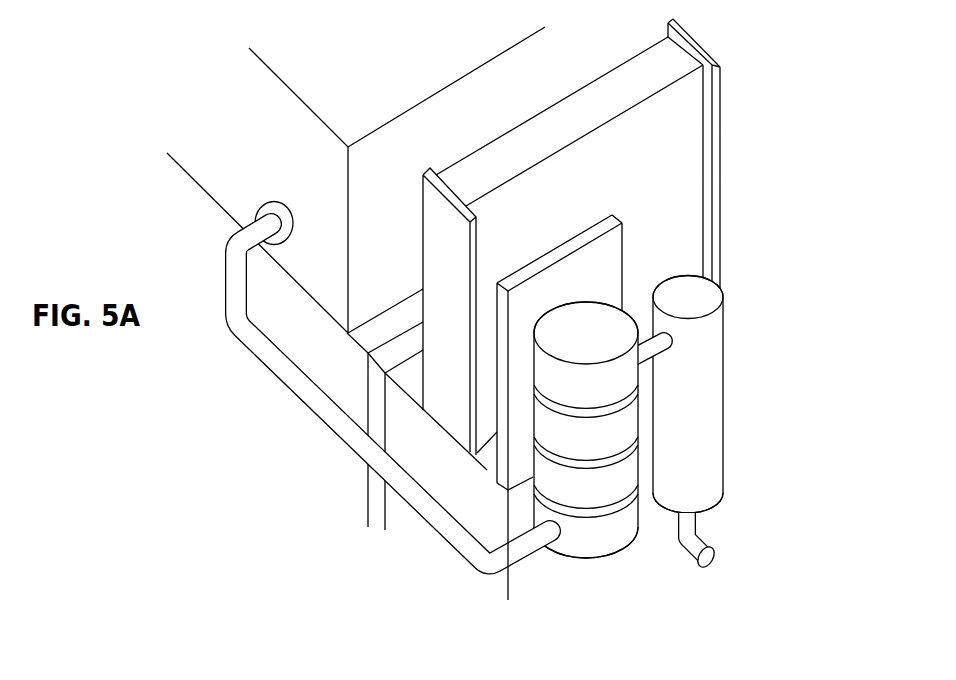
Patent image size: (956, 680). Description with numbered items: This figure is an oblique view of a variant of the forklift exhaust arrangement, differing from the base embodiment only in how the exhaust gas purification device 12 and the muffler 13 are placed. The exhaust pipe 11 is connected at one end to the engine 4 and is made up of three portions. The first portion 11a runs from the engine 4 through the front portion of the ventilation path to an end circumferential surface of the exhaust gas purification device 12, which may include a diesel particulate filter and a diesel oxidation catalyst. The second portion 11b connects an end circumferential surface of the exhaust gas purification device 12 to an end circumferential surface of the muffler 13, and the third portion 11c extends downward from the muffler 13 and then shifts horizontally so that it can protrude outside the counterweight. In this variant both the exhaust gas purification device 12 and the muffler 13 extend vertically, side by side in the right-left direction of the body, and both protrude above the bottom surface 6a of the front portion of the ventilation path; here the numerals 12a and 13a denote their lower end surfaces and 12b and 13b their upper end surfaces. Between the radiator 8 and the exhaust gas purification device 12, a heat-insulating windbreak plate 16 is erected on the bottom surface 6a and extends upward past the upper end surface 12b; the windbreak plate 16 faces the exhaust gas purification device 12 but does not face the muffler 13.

The engine 4 is at (233, 192).
The radiator 8 is at (677, 128).
The windbreak plate 16 is at (603, 260).
The bottom surface of the front portion of the ventilation path 6a is at (483, 457).
The exhaust pipe 11 is at (519, 414).
The first portion of the exhaust pipe 11a is at (318, 408).
The second portion of the exhaust pipe 11b is at (669, 348).
The third portion of the exhaust pipe 11c is at (690, 547).
The exhaust gas purification device 12 is at (667, 414).
The lower end surface of the exhaust gas purification device 12a is at (603, 581).
The upper end surface of the exhaust gas purification device 12b is at (588, 322).
The muffler 13 is at (732, 397).
The lower end surface of the muffler 13a is at (726, 518).
The upper end surface of the muffler 13b is at (695, 292).